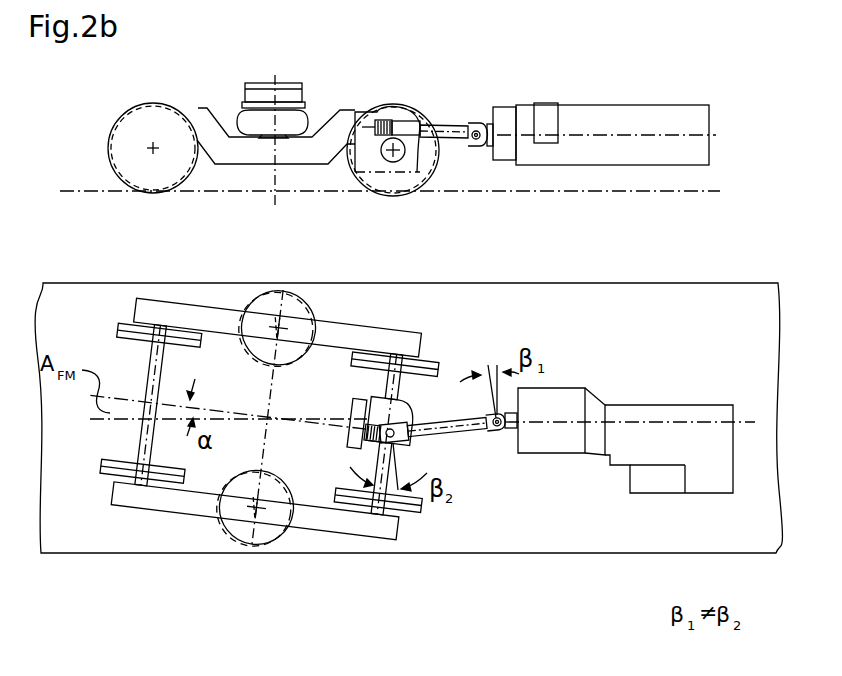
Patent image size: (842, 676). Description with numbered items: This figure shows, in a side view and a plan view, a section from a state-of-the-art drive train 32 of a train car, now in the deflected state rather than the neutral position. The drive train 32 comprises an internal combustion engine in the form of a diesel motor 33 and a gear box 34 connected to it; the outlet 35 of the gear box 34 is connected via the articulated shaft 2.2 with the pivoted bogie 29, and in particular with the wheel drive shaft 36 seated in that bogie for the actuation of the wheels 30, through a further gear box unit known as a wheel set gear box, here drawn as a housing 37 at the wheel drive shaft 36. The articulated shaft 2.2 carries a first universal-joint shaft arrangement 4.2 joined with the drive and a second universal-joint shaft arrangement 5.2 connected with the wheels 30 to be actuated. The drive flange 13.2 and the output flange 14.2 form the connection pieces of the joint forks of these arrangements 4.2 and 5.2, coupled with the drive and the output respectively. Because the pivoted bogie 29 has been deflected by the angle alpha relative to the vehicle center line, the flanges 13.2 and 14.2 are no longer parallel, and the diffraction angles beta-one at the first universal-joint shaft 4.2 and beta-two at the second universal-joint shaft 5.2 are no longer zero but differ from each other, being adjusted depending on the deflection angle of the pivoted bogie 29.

The articulated shaft 2.2 is at (446, 125).
The first universal-joint shaft 4.2 is at (470, 126).
The second universal-joint shaft 5.2 is at (393, 112).
The drive flange 13.2 is at (480, 147).
The output flange 14.2 is at (358, 440).
The pivoted bogie 29 is at (188, 313).
The wheels 30 is at (138, 175).
The drive train 32 is at (596, 80).
The diesel motor 33 is at (645, 125).
The gear box 34 is at (507, 113).
The outlet 35 is at (490, 150).
The wheel drive shaft 36 is at (380, 383).
The axle housing 37 is at (372, 167).